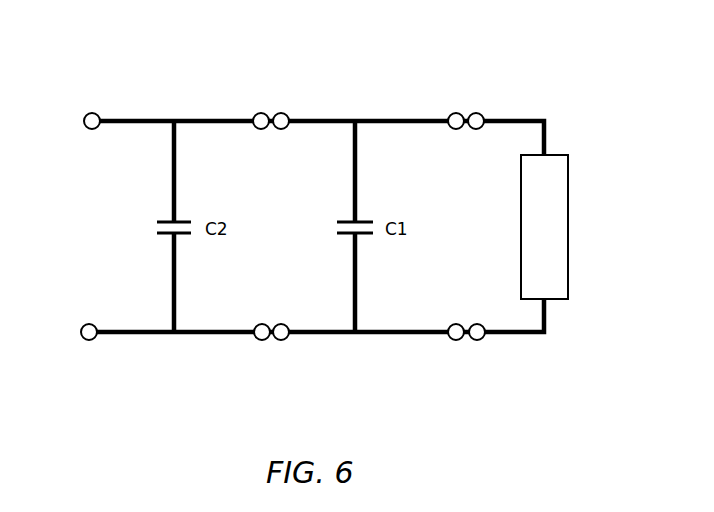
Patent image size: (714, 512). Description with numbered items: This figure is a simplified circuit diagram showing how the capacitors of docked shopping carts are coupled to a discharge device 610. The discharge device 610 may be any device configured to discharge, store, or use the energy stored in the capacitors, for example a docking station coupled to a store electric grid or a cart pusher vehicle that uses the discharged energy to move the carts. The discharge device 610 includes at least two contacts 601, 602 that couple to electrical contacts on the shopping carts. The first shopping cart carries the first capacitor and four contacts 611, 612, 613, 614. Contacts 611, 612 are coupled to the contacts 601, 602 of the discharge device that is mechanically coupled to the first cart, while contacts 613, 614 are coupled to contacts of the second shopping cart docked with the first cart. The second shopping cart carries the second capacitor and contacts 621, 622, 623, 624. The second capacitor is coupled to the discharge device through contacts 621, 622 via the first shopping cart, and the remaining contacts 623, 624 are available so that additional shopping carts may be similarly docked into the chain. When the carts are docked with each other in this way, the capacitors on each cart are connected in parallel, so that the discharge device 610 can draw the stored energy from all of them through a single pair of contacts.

The contact 601 is at (480, 110).
The contact 602 is at (481, 341).
The discharge device 610 is at (568, 208).
The contact 611 is at (453, 110).
The contact 612 is at (448, 341).
The contact 613 is at (285, 112).
The contact 614 is at (285, 341).
The contact 621 is at (259, 112).
The contact 622 is at (259, 341).
The contact 623 is at (89, 112).
The contact 624 is at (81, 340).